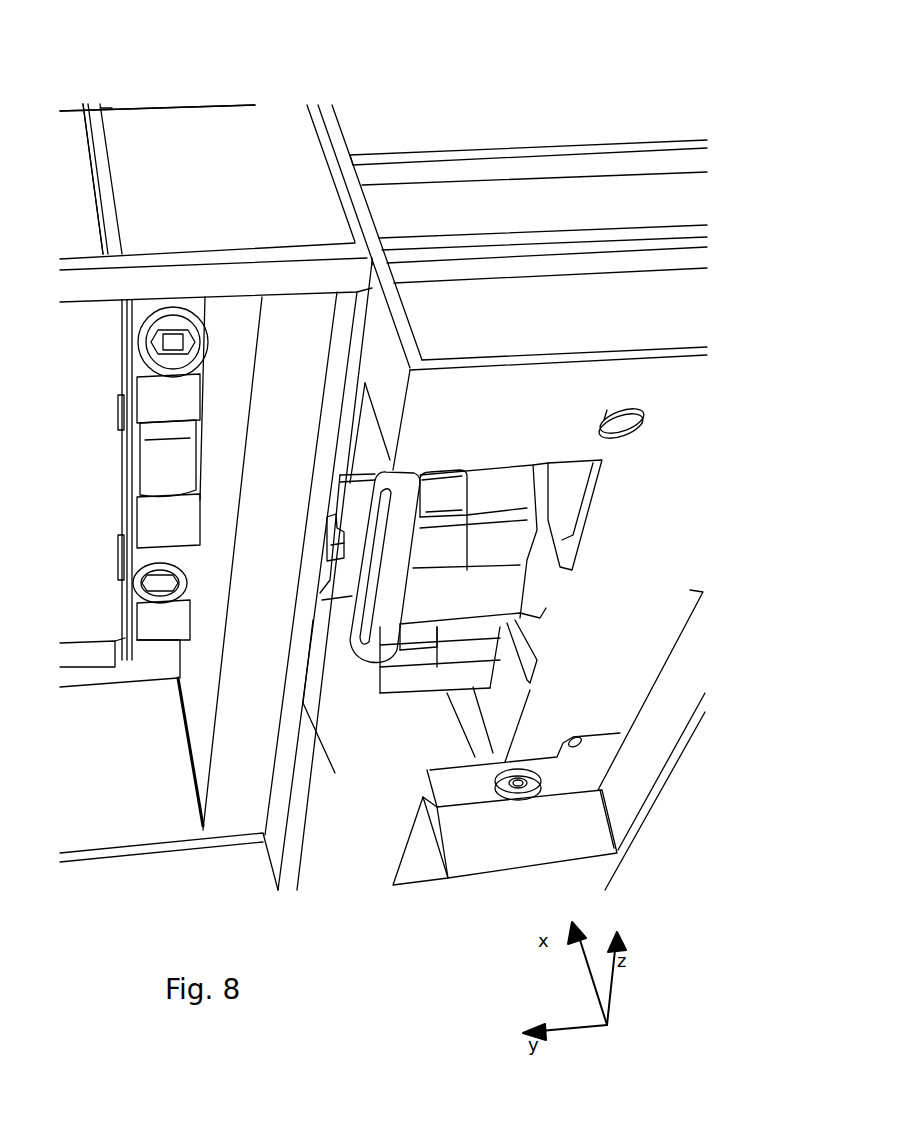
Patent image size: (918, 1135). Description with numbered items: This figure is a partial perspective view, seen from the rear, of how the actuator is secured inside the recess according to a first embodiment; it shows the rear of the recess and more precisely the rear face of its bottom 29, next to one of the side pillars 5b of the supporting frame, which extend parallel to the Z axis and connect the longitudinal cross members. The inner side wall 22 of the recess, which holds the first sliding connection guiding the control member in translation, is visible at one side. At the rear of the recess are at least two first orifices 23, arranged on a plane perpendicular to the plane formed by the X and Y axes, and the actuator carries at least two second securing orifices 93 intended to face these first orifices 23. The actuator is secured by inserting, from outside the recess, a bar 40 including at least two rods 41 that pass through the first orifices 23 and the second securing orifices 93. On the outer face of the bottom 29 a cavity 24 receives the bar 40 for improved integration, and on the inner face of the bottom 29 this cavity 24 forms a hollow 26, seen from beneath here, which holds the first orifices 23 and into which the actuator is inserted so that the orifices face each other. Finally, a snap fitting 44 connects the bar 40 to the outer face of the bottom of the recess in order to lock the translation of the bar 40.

The side pillar 5b is at (218, 163).
The inner side wall 22 is at (262, 510).
The snap fitting 44 is at (347, 560).
The first orifice 23 is at (467, 490).
The rod 41 is at (438, 493).
The cavity 24 is at (570, 460).
The hollow 26 is at (502, 585).
The bar 40 is at (372, 650).
The bottom 29 is at (667, 515).
The second securing orifice 93 is at (437, 643).